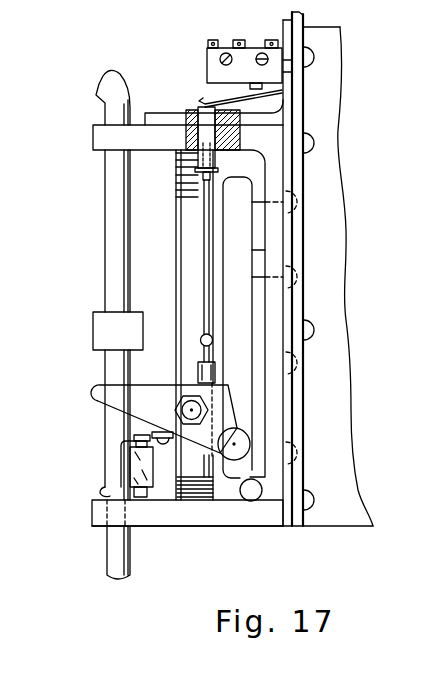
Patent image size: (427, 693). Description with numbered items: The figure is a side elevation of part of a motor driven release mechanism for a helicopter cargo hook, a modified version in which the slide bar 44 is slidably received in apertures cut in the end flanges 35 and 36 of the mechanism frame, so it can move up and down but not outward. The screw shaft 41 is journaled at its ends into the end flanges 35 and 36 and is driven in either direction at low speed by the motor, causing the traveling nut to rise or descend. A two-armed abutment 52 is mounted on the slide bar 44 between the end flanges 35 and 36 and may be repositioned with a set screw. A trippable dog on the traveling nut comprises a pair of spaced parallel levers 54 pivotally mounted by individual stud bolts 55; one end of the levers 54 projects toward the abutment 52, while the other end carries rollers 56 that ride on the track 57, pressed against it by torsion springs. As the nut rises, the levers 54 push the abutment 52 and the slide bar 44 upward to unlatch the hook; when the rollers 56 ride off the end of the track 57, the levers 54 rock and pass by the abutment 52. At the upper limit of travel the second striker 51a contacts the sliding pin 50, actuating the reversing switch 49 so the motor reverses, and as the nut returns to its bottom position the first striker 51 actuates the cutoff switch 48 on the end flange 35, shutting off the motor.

The end flange 35 is at (92, 518).
The end flange 36 is at (93, 137).
The screw shaft 41 is at (176, 251).
The slide bar 44 is at (105, 256).
The cutoff switch 48 is at (130, 467).
The reversing switch 49 is at (207, 68).
The sliding pin 50 is at (215, 172).
The striker 51 is at (146, 435).
The second striker 51a is at (206, 345).
The two-armed abutment 52 is at (93, 330).
The lever 54 is at (97, 389).
The stud bolt 55 is at (183, 400).
The roller 56 is at (233, 460).
The track 57 is at (256, 497).